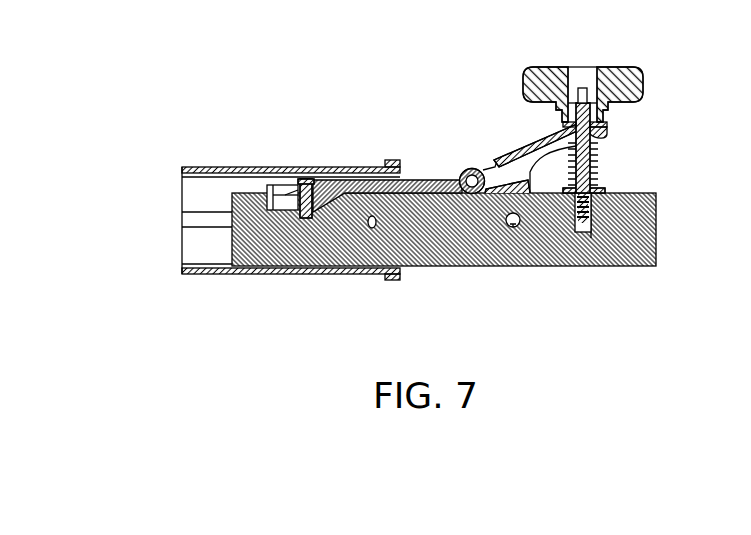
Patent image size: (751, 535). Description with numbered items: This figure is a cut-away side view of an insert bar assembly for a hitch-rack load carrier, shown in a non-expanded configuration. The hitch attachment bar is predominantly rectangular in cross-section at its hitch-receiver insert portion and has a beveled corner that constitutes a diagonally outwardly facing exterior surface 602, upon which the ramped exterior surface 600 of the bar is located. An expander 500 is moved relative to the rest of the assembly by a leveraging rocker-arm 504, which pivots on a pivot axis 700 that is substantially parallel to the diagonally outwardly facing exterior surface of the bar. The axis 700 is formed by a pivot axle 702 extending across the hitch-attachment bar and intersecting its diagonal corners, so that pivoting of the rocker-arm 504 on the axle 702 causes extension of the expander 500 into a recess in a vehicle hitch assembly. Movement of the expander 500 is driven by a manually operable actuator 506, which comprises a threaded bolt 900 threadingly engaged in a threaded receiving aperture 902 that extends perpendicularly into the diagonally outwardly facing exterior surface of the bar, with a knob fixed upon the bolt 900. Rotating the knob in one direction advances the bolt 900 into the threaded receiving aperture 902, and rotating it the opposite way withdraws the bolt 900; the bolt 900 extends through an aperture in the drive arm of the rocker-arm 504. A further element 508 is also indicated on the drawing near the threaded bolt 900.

The expander 500 is at (426, 172).
The leveraging rocker-arm 504 is at (515, 152).
The actuator 506 is at (610, 66).
The screw 508 is at (595, 246).
The ramped exterior surface 600 is at (330, 200).
The diagonally outwardly facing exterior surface 602 is at (335, 205).
The pivot axis 700 is at (507, 229).
The pivot axle 702 is at (514, 228).
The threaded bolt 900 is at (594, 235).
The threaded receiving aperture 902 is at (600, 191).